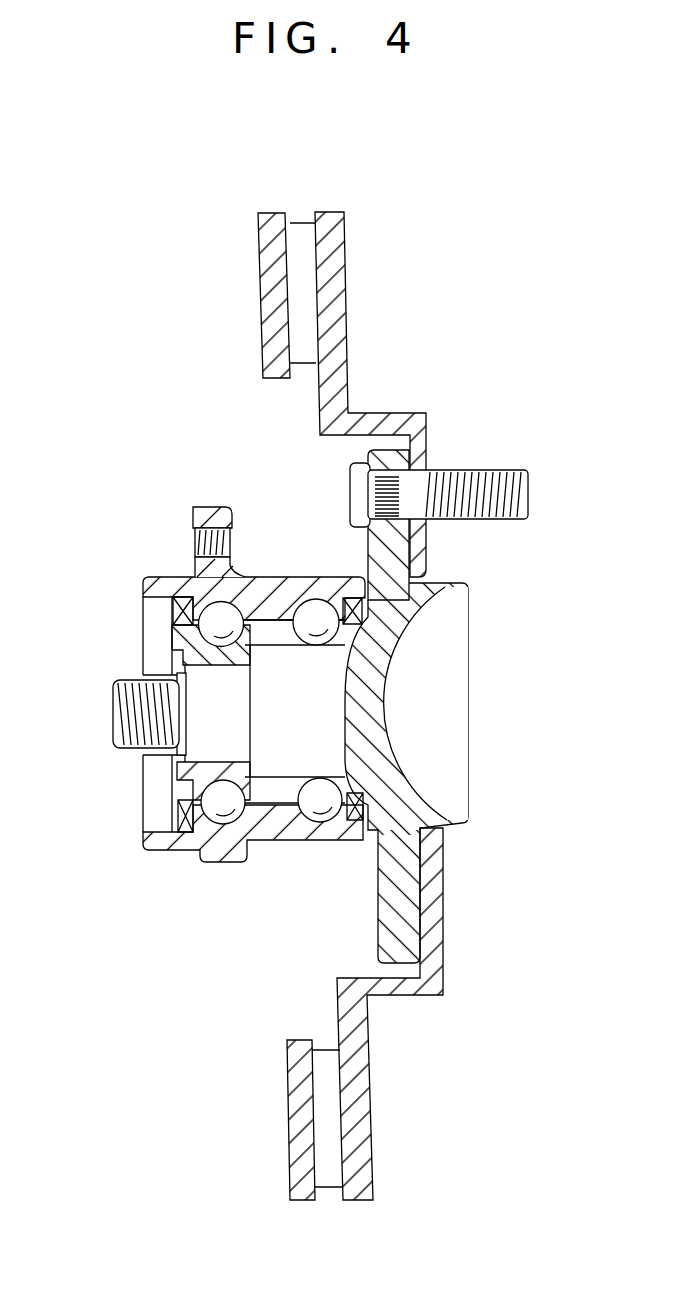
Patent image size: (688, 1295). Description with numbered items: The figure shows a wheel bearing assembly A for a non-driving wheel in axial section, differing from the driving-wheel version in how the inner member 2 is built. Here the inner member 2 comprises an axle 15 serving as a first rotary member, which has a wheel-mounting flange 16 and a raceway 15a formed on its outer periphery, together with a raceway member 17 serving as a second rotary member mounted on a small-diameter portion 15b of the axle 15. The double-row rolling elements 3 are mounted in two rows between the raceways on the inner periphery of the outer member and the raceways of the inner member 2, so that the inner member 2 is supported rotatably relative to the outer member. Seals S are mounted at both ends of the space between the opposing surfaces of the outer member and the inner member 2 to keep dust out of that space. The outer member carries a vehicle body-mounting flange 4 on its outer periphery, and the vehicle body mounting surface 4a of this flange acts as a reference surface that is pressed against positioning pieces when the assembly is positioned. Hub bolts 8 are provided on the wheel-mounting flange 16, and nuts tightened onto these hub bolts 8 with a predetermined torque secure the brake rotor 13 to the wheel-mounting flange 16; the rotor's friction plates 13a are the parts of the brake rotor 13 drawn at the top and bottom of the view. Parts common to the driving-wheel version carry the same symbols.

The inner member 2 is at (338, 598).
The double-row rolling elements 3 is at (173, 618).
The vehicle body-mounting flange 4 is at (235, 640).
The vehicle body mounting surface 4a is at (195, 519).
The hub bolts 8 is at (493, 477).
The brake rotor 13 is at (427, 532).
The rotor friction plates 13a is at (258, 271).
The axle 15 is at (432, 773).
The raceway 15a is at (386, 688).
The small-diameter portion 15b is at (177, 748).
The wheel-mounting flange 16 is at (387, 455).
The raceway member 17 is at (172, 655).
The seals S is at (193, 836).
The wheel bearing assembly A is at (128, 572).